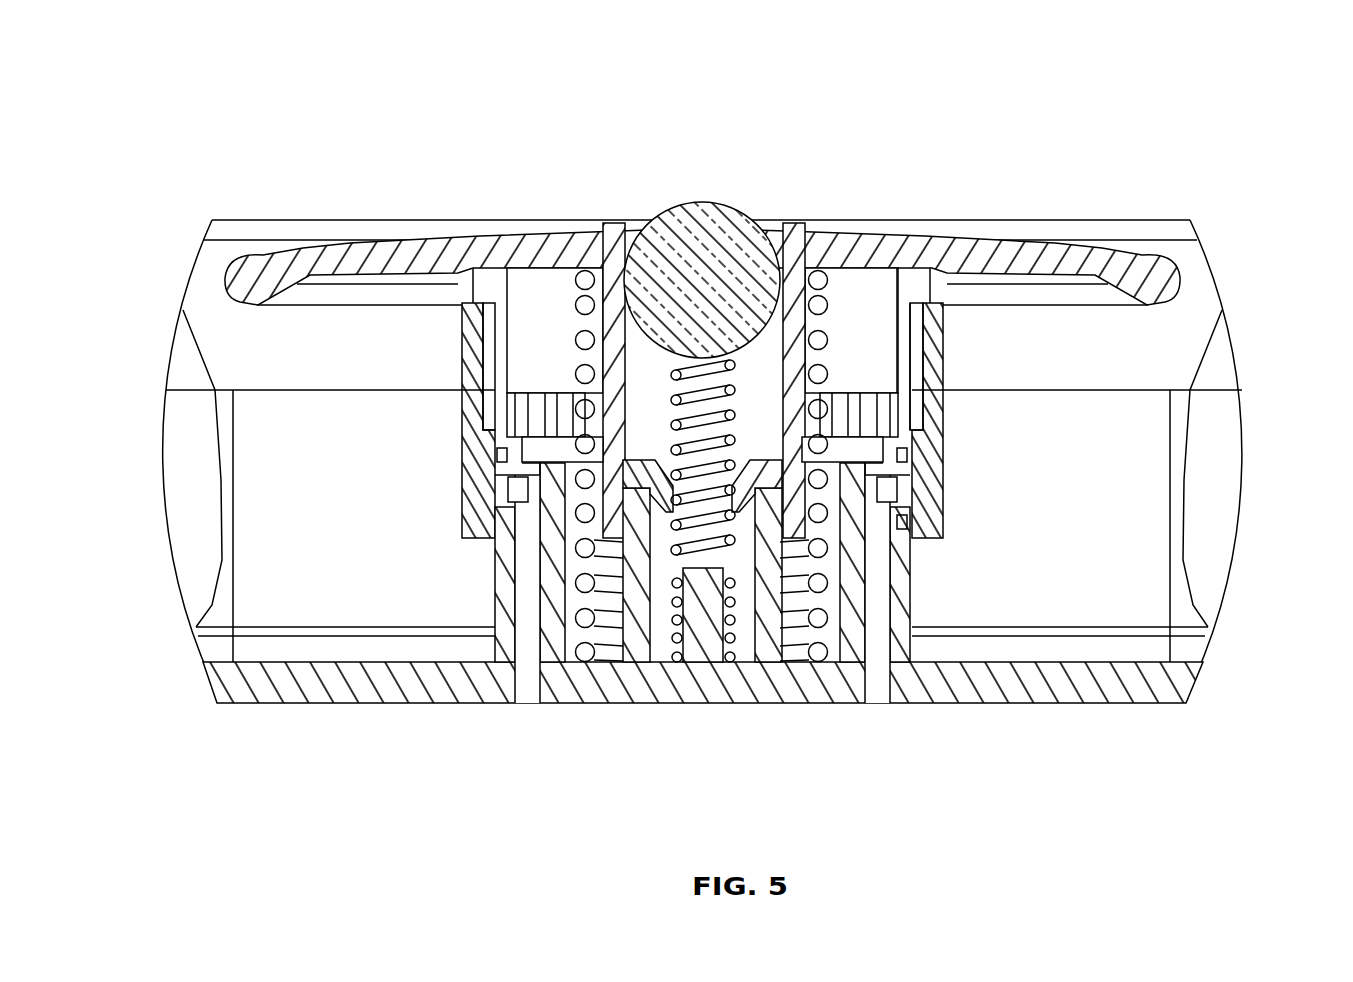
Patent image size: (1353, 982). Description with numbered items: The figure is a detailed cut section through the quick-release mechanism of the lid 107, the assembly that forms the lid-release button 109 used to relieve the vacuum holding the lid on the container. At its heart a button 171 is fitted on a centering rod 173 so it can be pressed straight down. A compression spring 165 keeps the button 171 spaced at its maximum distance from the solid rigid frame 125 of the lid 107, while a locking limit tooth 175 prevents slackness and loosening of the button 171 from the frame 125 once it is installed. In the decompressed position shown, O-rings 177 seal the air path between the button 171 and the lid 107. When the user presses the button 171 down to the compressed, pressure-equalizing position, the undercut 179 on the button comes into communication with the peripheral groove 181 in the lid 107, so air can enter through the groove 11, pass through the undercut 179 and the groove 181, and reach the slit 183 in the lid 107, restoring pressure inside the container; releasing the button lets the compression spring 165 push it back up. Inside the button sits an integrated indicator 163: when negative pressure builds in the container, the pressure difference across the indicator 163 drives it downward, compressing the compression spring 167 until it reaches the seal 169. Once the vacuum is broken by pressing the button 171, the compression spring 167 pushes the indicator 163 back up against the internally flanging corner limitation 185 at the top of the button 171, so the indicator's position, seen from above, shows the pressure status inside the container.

The lid-release button 109 is at (193, 95).
The groove 11 is at (470, 300).
The compression spring 167 is at (667, 350).
The internally flanging corner limitation 185 is at (702, 344).
The integrated indicator 163 is at (728, 205).
The compression spring 165 is at (832, 282).
The button 171 is at (937, 300).
The locking limit tooth 175 is at (382, 403).
The O-rings 177 is at (261, 461).
The undercut 179 is at (920, 367).
The peripheral groove 181 is at (905, 488).
The seal 169 is at (603, 531).
The slit 183 is at (530, 703).
The solid rigid frame 125 is at (950, 688).
The lid 107 is at (1053, 683).
The centering rod 173 is at (1140, 461).